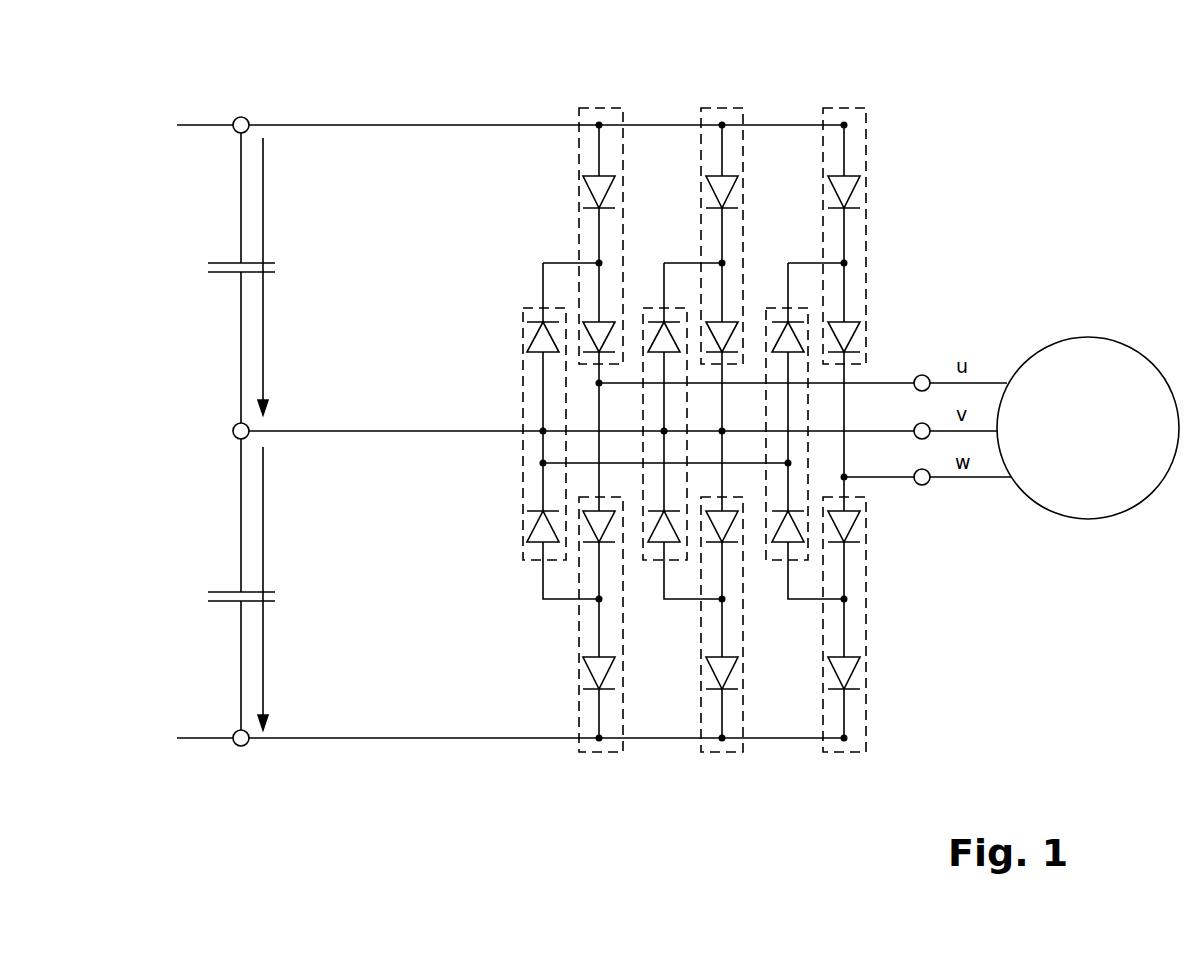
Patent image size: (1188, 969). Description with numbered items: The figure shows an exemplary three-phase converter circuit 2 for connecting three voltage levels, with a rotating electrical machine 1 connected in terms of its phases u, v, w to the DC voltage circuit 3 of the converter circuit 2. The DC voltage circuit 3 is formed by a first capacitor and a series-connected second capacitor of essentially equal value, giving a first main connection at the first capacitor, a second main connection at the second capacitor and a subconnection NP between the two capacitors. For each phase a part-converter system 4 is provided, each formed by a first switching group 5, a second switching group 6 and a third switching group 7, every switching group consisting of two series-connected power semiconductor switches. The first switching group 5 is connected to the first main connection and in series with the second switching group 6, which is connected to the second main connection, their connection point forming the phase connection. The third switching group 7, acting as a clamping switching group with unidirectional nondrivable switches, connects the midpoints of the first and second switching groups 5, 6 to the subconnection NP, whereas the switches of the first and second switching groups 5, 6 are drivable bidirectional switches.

The rotating electrical machine 1 is at (1075, 337).
The converter circuit for connecting three voltage levels 2 is at (390, 108).
The DC voltage circuit 3 is at (205, 350).
The part-converter system 4 is at (725, 439).
The first switching group 5 is at (618, 108).
The second switching group 6 is at (610, 752).
The third switching group 7 is at (527, 560).